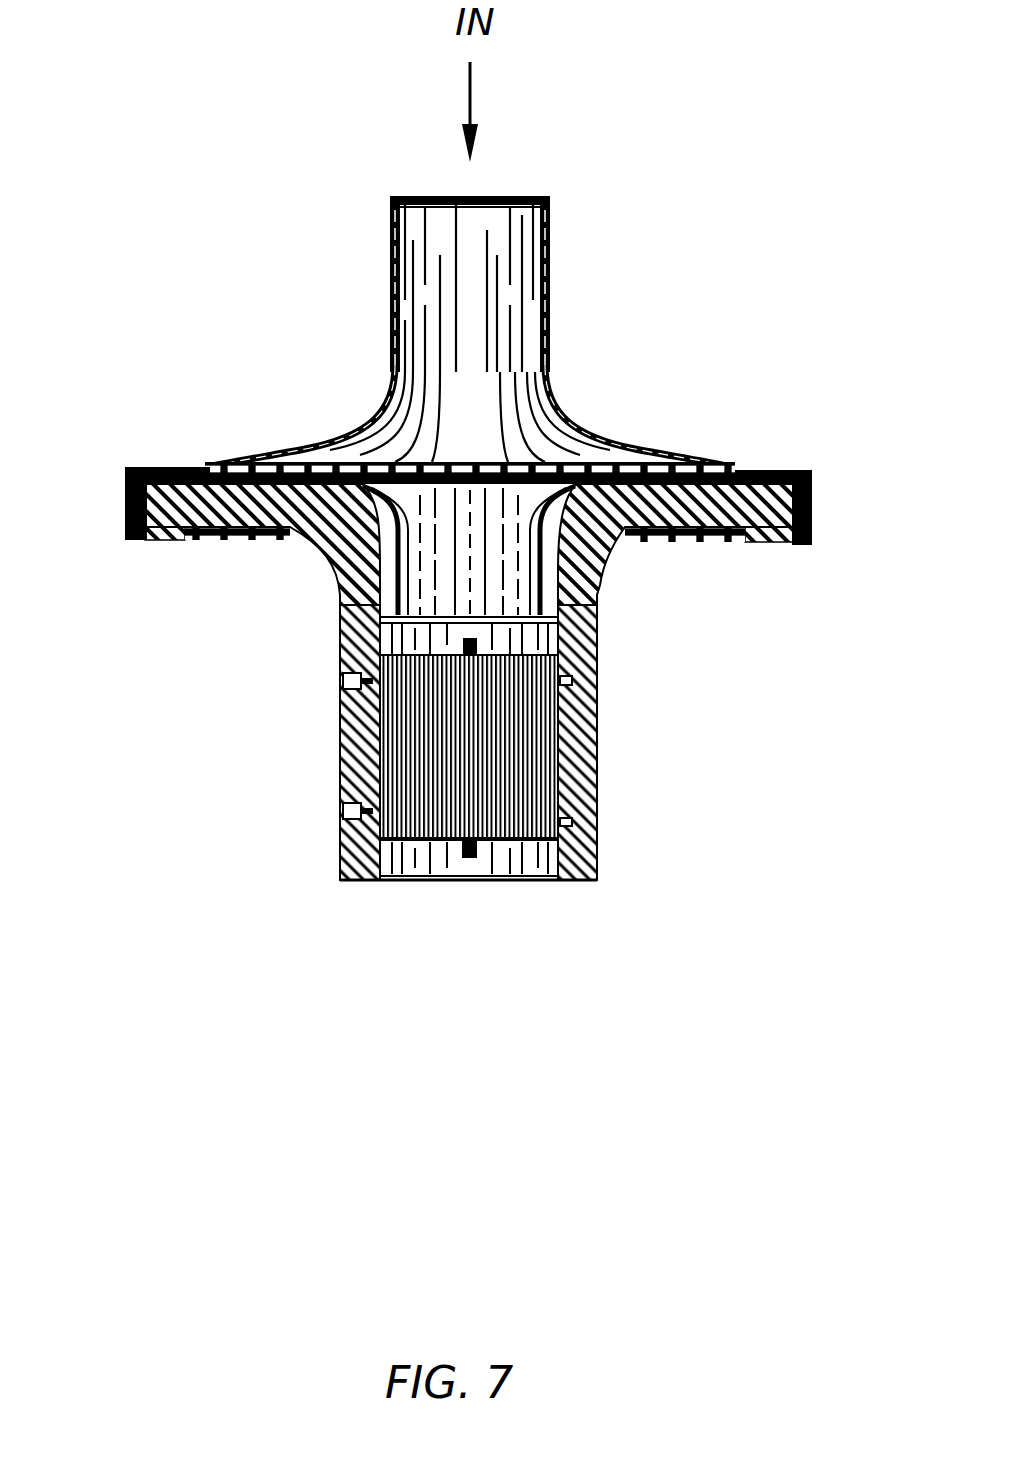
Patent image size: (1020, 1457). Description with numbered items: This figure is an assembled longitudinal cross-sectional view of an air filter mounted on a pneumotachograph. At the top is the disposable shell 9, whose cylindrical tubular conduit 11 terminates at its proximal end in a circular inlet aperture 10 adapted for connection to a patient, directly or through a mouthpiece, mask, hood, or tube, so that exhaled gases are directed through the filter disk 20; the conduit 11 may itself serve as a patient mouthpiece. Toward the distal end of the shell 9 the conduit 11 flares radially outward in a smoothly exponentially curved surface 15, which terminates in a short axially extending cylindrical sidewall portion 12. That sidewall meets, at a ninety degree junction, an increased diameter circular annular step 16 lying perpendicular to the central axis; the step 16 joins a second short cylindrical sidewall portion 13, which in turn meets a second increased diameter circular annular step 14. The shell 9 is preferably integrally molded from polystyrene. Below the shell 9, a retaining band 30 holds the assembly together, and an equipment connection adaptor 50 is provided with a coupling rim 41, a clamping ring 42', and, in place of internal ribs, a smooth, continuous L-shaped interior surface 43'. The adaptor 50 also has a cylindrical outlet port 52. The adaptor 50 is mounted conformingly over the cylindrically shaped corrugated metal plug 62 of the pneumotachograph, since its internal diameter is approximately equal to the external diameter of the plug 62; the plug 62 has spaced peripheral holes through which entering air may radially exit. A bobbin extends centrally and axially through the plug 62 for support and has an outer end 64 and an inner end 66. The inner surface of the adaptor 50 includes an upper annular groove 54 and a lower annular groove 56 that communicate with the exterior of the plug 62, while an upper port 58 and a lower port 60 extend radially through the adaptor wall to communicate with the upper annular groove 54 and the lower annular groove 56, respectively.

The circular inlet aperture 10 is at (515, 197).
The cylindrical tubular conduit 11 is at (390, 313).
The disposable shell 9 is at (373, 407).
The exponentially curved surface 15 is at (572, 410).
The circular annular step 16 is at (183, 467).
The cylindrical sidewall portion 12 is at (198, 465).
The second short cylindrical sidewall portion 13 is at (148, 467).
The second increased diameter circular annular step 14 is at (127, 482).
The flange bottom layer 41 is at (127, 515).
The filter disk 20 is at (738, 465).
The retaining band 30 is at (812, 490).
The clamping ring 42' is at (706, 598).
The smooth, continuous L-shaped interior surface 43' is at (470, 588).
The inner end of bobbin 66 is at (470, 645).
The upper annular groove 54 is at (597, 697).
The upper port 58 is at (338, 682).
The equipment connection adaptor 50 is at (338, 753).
The lower port 60 is at (338, 813).
The lower annular groove 56 is at (598, 832).
The plug 62 is at (412, 882).
The outer end of bobbin 64 is at (477, 882).
The cylindrical outlet port 52 is at (553, 882).